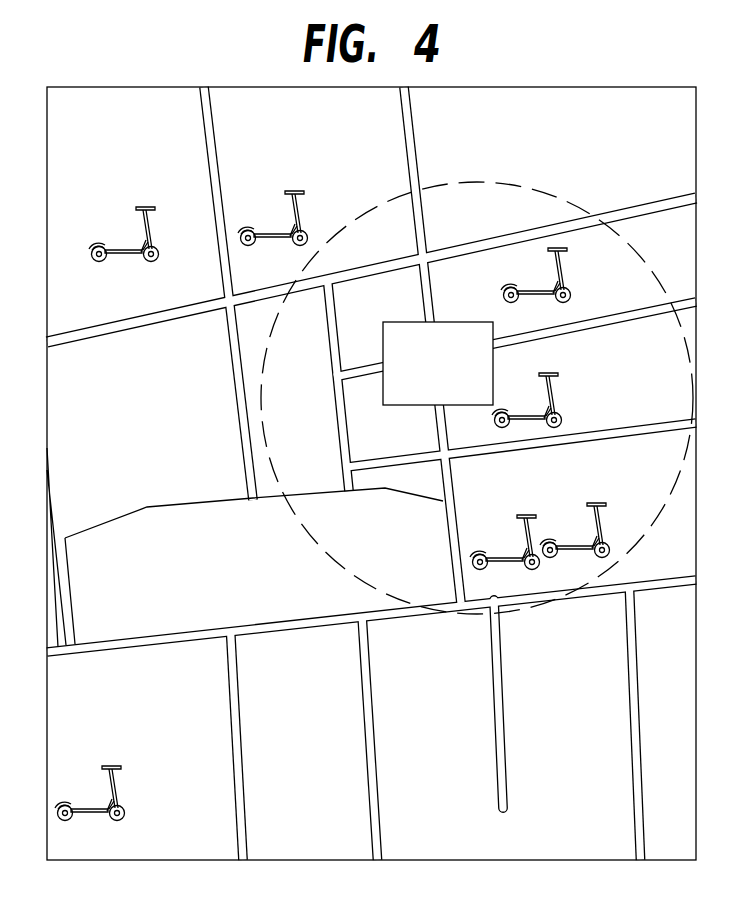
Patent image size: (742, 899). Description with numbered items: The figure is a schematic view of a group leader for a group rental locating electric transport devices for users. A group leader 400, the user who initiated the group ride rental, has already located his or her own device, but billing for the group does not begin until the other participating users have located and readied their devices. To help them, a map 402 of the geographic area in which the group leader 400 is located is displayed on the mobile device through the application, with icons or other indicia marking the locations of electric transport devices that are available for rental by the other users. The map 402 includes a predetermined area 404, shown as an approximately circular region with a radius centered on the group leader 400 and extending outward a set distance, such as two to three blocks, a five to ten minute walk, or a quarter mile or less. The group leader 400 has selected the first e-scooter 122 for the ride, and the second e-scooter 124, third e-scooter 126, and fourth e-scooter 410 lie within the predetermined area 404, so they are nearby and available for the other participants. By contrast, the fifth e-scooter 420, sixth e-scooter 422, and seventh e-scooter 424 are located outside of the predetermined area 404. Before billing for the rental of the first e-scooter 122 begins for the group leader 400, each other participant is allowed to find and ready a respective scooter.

The group leader 400 is at (406, 322).
The map 402 is at (598, 87).
The predetermined area 404 is at (528, 190).
The first e-scooter 122 is at (528, 416).
The second e-scooter 124 is at (537, 292).
The third e-scooter 126 is at (500, 558).
The fourth e-scooter 410 is at (577, 546).
The fifth e-scooter 420 is at (126, 250).
The sixth e-scooter 422 is at (272, 235).
The seventh e-scooter 424 is at (92, 810).